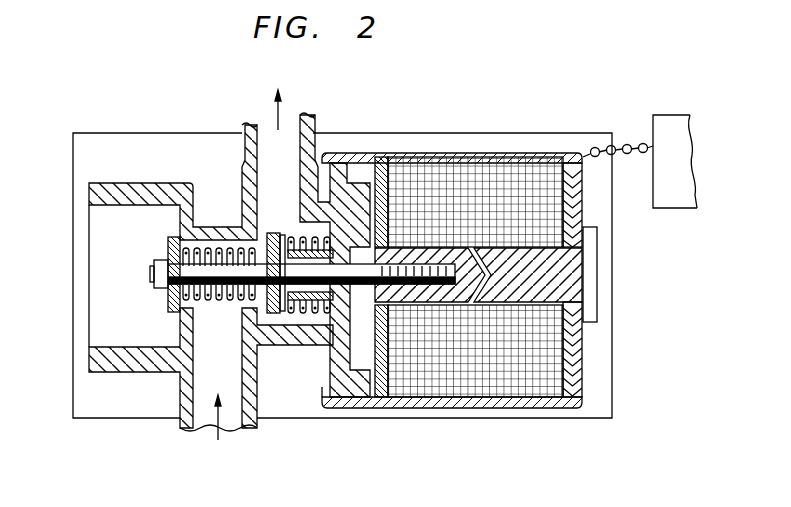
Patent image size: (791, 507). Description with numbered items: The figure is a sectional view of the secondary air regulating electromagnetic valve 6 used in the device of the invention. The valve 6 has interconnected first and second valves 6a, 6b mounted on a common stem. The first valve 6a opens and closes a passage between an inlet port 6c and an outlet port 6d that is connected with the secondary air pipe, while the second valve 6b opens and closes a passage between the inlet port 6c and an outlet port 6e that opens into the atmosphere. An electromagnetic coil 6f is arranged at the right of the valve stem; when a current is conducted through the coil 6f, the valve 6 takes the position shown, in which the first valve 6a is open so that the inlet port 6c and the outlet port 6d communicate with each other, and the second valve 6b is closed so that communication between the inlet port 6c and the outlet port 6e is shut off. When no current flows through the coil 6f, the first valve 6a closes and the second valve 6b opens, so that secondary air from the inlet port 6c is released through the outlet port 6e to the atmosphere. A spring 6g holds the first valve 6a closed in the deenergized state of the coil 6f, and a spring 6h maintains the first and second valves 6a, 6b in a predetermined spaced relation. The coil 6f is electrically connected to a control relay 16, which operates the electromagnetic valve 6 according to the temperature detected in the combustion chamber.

The secondary air regulating electromagnetic valve 6 is at (490, 134).
The first valve 6a is at (273, 233).
The second valve 6b is at (168, 243).
The inlet port 6c is at (200, 430).
The outlet port 6d is at (254, 127).
The outlet port 6e is at (90, 303).
The electromagnetic coil 6f is at (546, 157).
The spring 6g is at (290, 315).
The spring 6h is at (215, 300).
The control relay 16 is at (665, 210).